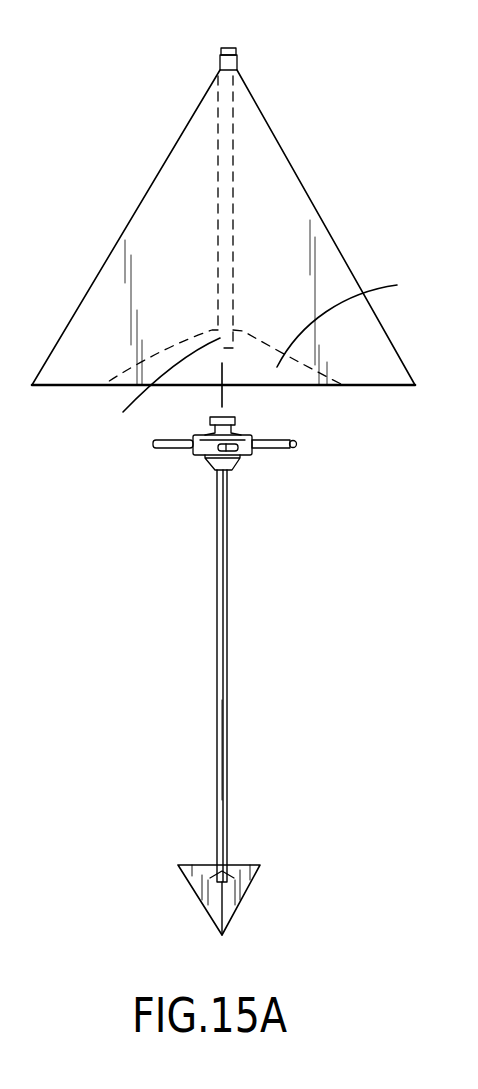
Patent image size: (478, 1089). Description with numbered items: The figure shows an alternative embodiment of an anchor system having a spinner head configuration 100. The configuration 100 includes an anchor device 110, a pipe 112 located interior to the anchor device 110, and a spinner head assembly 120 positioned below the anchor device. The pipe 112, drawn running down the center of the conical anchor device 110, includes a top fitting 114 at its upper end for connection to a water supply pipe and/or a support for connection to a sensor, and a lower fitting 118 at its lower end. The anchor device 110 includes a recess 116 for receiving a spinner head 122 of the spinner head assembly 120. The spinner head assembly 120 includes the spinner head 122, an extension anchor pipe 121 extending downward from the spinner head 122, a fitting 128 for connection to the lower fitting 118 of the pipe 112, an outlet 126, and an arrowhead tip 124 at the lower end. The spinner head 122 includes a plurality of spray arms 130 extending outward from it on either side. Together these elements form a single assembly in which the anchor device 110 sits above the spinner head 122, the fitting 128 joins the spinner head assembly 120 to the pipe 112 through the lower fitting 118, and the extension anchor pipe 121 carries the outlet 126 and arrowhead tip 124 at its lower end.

The configuration 100 is at (118, 105).
The anchor device 110 is at (160, 213).
The pipe 112 is at (229, 63).
The top fitting 114 is at (224, 50).
The recess 116 is at (356, 317).
The lower fitting 118 is at (151, 386).
The spinner head assembly 120 is at (224, 653).
The extension anchor pipe 121 is at (224, 755).
The spinner head 122 is at (200, 447).
The arrowhead tip 124 is at (238, 888).
The outlet 126 is at (213, 880).
The fitting 128 is at (230, 417).
The spray arms 130 is at (152, 444).